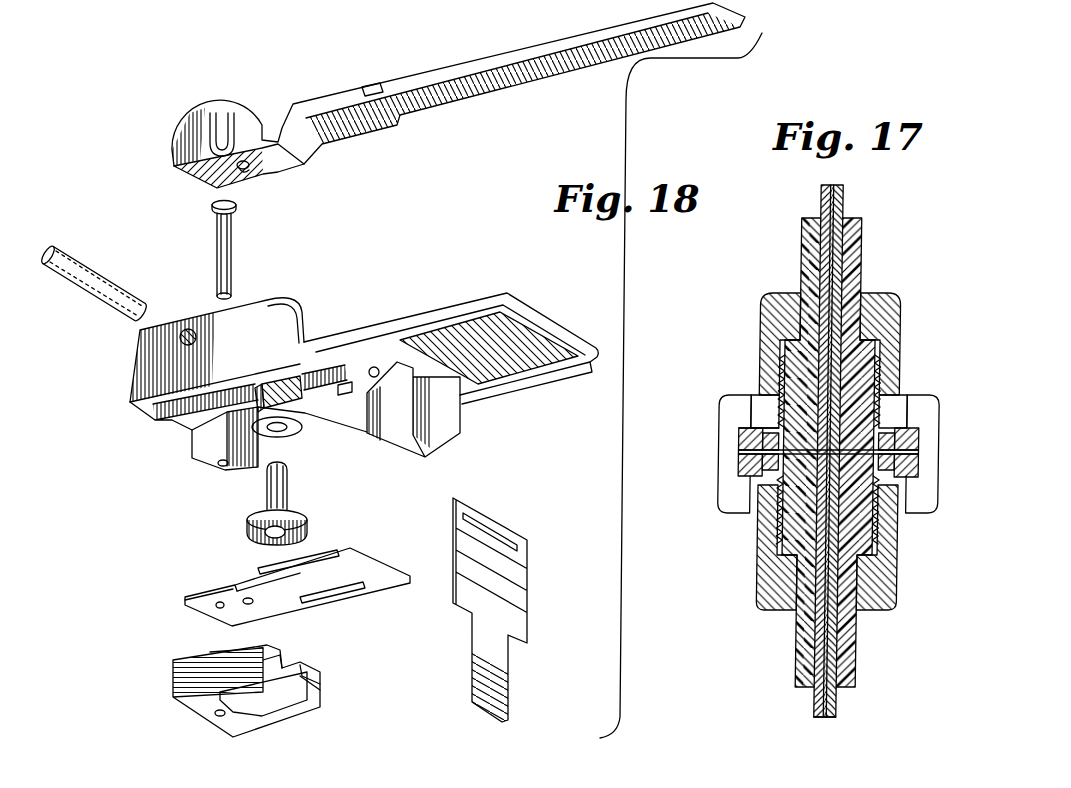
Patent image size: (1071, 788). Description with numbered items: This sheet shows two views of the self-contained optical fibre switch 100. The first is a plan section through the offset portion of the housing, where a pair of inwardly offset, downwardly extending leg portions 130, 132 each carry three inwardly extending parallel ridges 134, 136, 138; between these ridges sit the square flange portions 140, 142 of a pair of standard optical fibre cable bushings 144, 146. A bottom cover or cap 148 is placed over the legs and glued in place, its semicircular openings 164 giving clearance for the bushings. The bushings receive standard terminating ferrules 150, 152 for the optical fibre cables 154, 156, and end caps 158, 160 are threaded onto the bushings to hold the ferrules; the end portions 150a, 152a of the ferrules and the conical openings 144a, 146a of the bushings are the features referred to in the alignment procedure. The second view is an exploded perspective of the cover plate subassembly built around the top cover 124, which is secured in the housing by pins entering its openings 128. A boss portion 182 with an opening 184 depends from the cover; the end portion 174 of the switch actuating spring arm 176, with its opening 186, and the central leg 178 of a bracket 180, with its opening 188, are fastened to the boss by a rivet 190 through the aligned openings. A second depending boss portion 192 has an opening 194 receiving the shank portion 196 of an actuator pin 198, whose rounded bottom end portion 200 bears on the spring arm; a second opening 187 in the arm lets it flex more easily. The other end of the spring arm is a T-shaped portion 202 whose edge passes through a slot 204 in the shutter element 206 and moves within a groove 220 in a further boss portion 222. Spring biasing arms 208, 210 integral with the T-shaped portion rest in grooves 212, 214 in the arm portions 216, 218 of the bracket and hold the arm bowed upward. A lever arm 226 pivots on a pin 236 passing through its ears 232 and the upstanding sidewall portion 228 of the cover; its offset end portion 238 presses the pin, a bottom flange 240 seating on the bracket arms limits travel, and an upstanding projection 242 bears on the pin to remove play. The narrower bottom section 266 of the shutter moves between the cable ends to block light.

In FIG. 18, the pedal assembly 100 is at (575, 1).
In FIG. 18, the top cover 124 is at (474, 300).
In FIG. 18, the openings 128 is at (376, 368).
In FIG. 17, the leg portion 130 is at (757, 430).
In FIG. 17, the leg portion 132 is at (898, 468).
In FIG. 17, the ridge 134 is at (754, 398).
In FIG. 17, the ridge 136 is at (757, 460).
In FIG. 17, the ridge 138 is at (763, 477).
In FIG. 17, the square flange portion 140 is at (922, 452).
In FIG. 17, the square flange portion 142 is at (760, 442).
In FIG. 17, the optical fibre cable bushing 144 is at (830, 527).
In FIG. 17, the conical opening 144a is at (867, 548).
In FIG. 17, the optical fibre cable bushing 146 is at (828, 369).
In FIG. 17, the conical opening 146a is at (790, 353).
In FIG. 17, the bottom cover or cap 148 is at (722, 507).
In FIG. 17, the terminating ferrule 150 is at (857, 667).
In FIG. 17, the end portion 150a is at (778, 517).
In FIG. 17, the terminating ferrule 152 is at (858, 451).
In FIG. 17, the end portion 152a is at (847, 417).
In FIG. 17, the optical fibre cable 154 is at (815, 710).
In FIG. 17, the optical fibre cable 156 is at (843, 203).
In FIG. 17, the end cap 158 is at (758, 607).
In FIG. 17, the end cap 160 is at (887, 293).
In FIG. 17, the semicircular openings 164 is at (757, 393).
In FIG. 18, the end portion 174 is at (205, 612).
In FIG. 18, the switch actuating spring arm 176 is at (257, 580).
In FIG. 18, the central leg 178 is at (240, 714).
In FIG. 18, the bracket 180 is at (249, 684).
In FIG. 18, the boss portion 182 is at (196, 444).
In FIG. 18, the opening 184 is at (220, 464).
In FIG. 18, the opening 186 is at (217, 604).
In FIG. 18, the second opening 187 is at (251, 605).
In FIG. 18, the opening 188 is at (219, 713).
In FIG. 18, the rivet 190 is at (236, 253).
In FIG. 18, the boss portion 192 is at (293, 407).
In FIG. 18, the opening 194 is at (281, 432).
In FIG. 18, the shank portion 196 is at (280, 503).
In FIG. 18, the actuator pin 198 is at (290, 490).
In FIG. 18, the rounded bottom end portion 200 is at (286, 537).
In FIG. 18, the T-shaped portion 202 is at (281, 583).
In FIG. 18, the slot 204 is at (501, 540).
In FIG. 18, the shutter element 206 is at (514, 603).
In FIG. 18, the spring biasing arm 208 is at (270, 567).
In FIG. 18, the spring biasing arm 210 is at (318, 602).
In FIG. 18, the groove 212 is at (281, 661).
In FIG. 18, the groove 214 is at (323, 690).
In FIG. 18, the arm portion 216 is at (240, 658).
In FIG. 18, the arm portion 218 is at (302, 676).
In FIG. 18, the groove 220 is at (351, 383).
In FIG. 18, the boss portion 222 is at (405, 418).
In FIG. 18, the lever arm 226 is at (515, 88).
In FIG. 18, the upstanding sidewall portion 228 is at (262, 310).
In FIG. 18, the ear 232 is at (232, 104).
In FIG. 18, the pin 236 is at (100, 270).
In FIG. 18, the offset end portion 238 is at (182, 183).
In FIG. 18, the bottom flange 240 is at (301, 516).
In FIG. 18, the upstanding projection 242 is at (243, 170).
In FIG. 18, the bottom section 266 is at (500, 675).